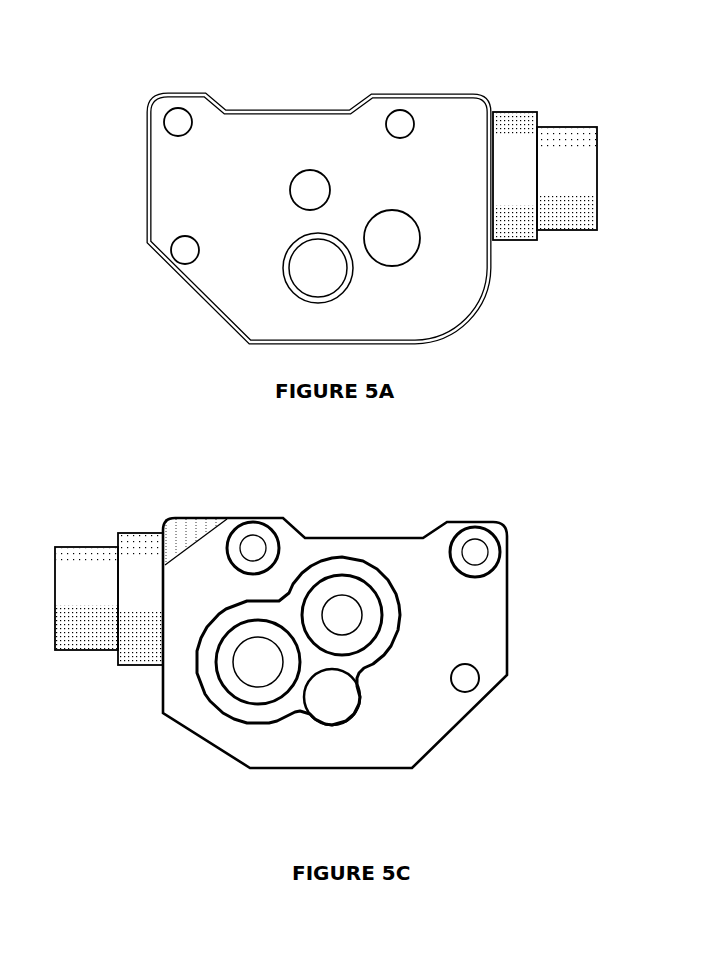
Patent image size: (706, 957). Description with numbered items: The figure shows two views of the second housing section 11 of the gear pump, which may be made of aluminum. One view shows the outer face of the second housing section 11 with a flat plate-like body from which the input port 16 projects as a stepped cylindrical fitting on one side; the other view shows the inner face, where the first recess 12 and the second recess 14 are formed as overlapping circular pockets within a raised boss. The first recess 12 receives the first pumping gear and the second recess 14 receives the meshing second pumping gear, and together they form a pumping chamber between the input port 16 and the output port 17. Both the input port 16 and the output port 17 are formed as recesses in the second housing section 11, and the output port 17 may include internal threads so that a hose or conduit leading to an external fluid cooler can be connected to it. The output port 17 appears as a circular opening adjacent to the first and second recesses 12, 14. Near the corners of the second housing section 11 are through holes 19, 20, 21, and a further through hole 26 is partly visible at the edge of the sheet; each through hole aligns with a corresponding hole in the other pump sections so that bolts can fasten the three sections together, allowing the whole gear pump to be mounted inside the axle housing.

In FIG. 5A, the second housing section 11 is at (496, 296).
In FIG. 5C, the second housing section 11 is at (500, 717).
In FIG. 5C, the first recess 12 is at (238, 702).
In FIG. 5C, the second recess 14 is at (357, 570).
In FIG. 5A, the input port 16 is at (562, 158).
In FIG. 5C, the input port 16 is at (73, 557).
In FIG. 5A, the output port 17 is at (313, 293).
In FIG. 5C, the output port 17 is at (332, 705).
In FIG. 5A, the through hole 19 is at (173, 117).
In FIG. 5C, the through hole 19 is at (475, 552).
In FIG. 5A, the through hole 20 is at (183, 250).
In FIG. 5C, the through hole 20 is at (465, 678).
In FIG. 5A, the through hole 21 is at (400, 123).
In FIG. 5C, the through hole 21 is at (253, 548).
In FIG. 5C, the through hole 26 is at (705, 684).